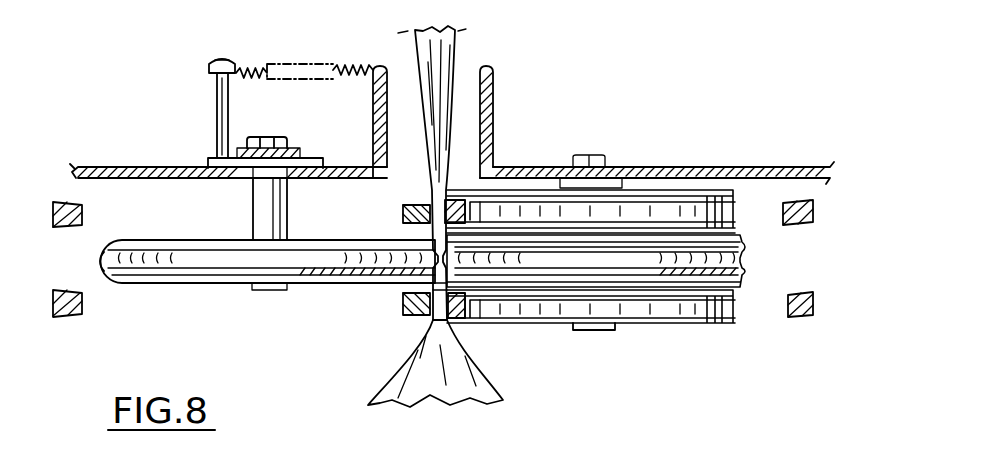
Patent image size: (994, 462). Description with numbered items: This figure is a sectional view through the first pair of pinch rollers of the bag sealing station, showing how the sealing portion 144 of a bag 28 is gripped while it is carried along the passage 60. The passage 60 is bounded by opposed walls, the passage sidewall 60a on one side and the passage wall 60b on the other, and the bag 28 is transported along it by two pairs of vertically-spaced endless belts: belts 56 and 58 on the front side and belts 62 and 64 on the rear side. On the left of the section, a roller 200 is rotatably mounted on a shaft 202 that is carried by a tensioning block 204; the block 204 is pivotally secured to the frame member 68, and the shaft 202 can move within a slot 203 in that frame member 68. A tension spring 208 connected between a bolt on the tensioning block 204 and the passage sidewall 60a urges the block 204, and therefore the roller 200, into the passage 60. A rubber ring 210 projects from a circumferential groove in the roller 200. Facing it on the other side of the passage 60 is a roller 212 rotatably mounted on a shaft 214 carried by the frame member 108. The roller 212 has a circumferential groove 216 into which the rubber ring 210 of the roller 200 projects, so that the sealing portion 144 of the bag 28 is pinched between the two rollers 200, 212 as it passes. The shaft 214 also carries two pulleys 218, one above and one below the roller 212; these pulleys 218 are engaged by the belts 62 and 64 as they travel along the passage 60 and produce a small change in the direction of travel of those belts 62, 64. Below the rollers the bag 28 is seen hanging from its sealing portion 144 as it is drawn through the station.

The bag 28 is at (388, 383).
The endless belt 56 is at (83, 211).
The endless belt 58 is at (83, 313).
The passage 60 is at (410, 117).
The passage sidewall 60a is at (494, 110).
The passage wall 60b is at (374, 126).
The endless belt 62 is at (814, 208).
The endless belt 64 is at (814, 306).
The frame member 68 is at (157, 167).
The frame member 108 is at (645, 166).
The sealing portion 144 is at (430, 287).
The roller 200 is at (188, 284).
The shaft 202 is at (258, 206).
The slot 203 is at (292, 180).
The tensioning block 204 is at (289, 140).
The tension spring 208 is at (303, 79).
The rubber ring 210 is at (220, 102).
The roller 212 is at (741, 246).
The shaft 214 is at (588, 333).
The circumferential groove 216 is at (739, 262).
The pulley 218 is at (725, 189).